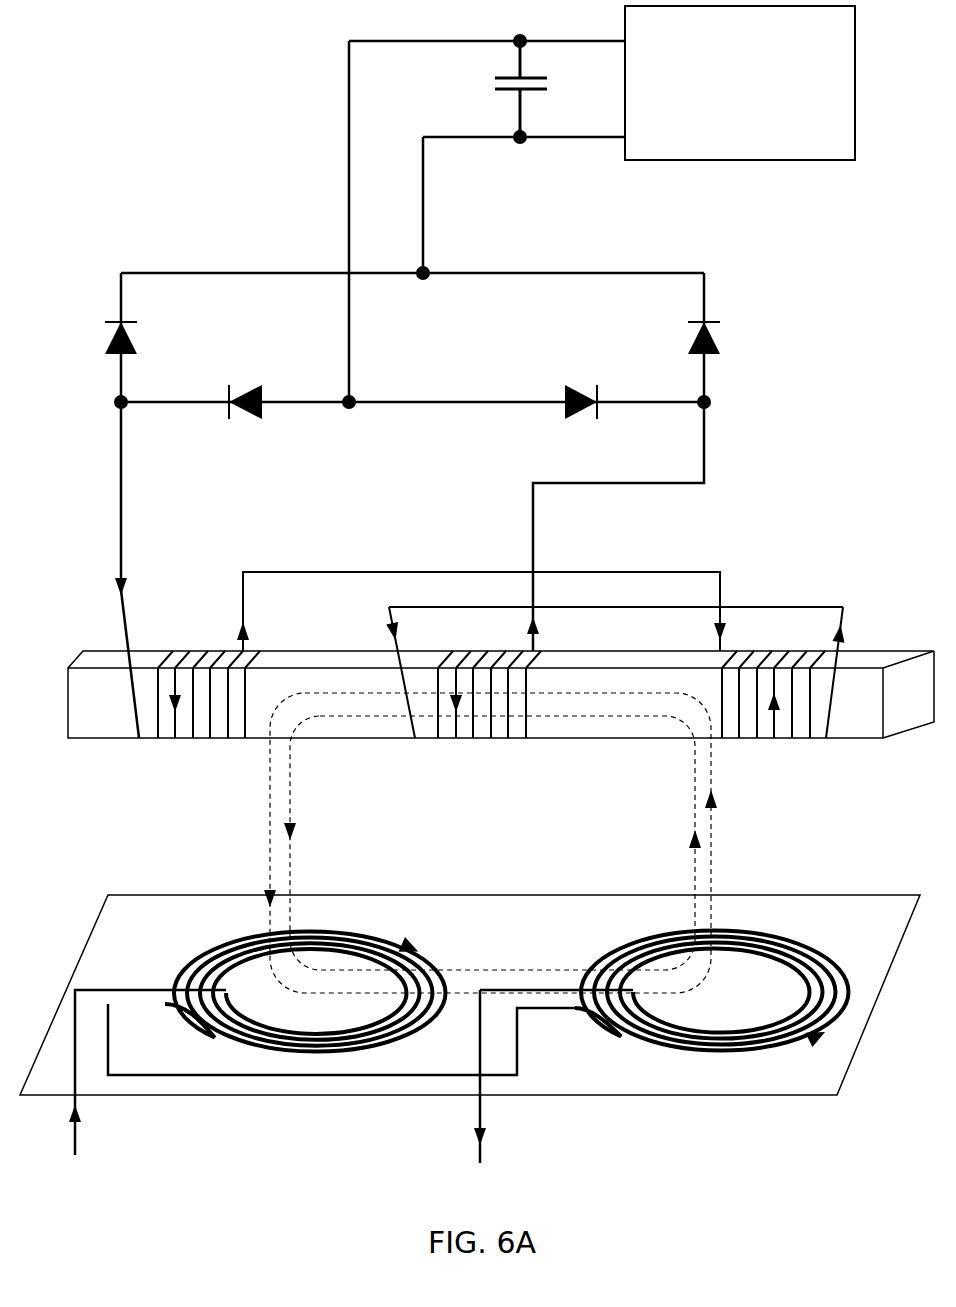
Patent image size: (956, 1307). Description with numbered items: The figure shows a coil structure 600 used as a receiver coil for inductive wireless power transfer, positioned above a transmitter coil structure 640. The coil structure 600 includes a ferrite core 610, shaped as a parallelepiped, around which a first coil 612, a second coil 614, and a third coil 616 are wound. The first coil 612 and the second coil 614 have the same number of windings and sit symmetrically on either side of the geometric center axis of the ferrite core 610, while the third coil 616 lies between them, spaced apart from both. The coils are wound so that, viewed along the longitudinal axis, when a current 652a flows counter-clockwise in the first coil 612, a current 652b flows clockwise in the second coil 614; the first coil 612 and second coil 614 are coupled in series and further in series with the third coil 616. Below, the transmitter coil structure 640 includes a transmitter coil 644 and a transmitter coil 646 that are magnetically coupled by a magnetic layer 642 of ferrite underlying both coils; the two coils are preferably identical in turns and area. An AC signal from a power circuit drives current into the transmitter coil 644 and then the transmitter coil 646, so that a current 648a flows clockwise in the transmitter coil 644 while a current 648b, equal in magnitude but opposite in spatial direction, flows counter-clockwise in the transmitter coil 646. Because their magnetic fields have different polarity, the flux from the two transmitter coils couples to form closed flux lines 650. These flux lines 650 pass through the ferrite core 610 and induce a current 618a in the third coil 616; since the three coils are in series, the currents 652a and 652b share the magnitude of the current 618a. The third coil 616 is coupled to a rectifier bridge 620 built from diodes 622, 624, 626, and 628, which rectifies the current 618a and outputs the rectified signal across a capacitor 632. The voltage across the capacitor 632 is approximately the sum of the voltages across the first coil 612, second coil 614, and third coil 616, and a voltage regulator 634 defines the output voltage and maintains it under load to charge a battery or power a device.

The coil structure 600 is at (787, 576).
The ferrite core 610 is at (80, 738).
The first coil 612 is at (190, 760).
The second coil 614 is at (764, 762).
The third coil 616 is at (467, 760).
The current 618a is at (540, 632).
The rectifier bridge 620 is at (263, 231).
The diode 622 is at (107, 338).
The diode 624 is at (243, 386).
The diode 626 is at (586, 390).
The diode 628 is at (718, 343).
The capacitor 632 is at (500, 88).
The voltage regulator 634 is at (790, 162).
The transmitter coil structure 640 is at (201, 1174).
The magnetic layer 642 is at (548, 1093).
The transmitter coil 644 is at (242, 1053).
The transmitter coil 646 is at (657, 1057).
The current 648a is at (370, 937).
The current 648b is at (787, 1055).
The closed flux lines 650 is at (700, 793).
The current 652a is at (240, 630).
The current 652b is at (845, 632).